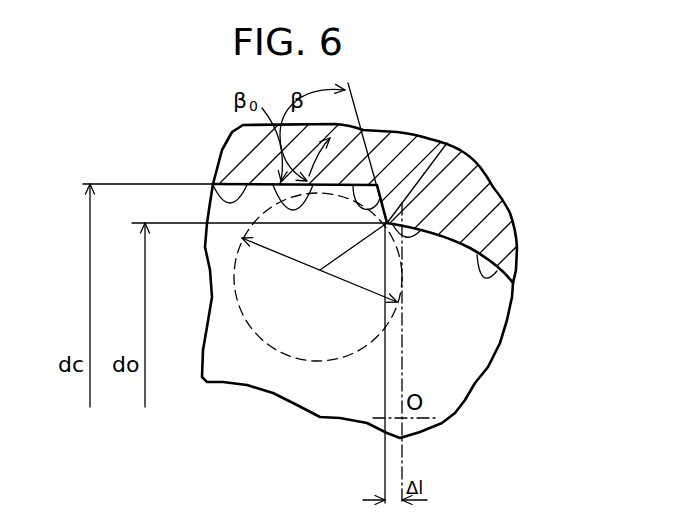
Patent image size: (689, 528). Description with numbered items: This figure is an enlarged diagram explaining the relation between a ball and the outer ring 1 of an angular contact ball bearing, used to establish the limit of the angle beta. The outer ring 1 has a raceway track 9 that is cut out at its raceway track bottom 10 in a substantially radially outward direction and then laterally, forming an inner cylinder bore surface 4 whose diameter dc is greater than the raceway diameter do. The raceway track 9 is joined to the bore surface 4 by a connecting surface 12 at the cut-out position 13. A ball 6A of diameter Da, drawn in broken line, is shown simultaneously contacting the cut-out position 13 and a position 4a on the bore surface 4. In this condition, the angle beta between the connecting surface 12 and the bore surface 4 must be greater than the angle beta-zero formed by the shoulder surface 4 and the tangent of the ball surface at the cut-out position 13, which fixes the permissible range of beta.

The outer ring 1 is at (483, 200).
The inner cylinder bore surface 4 is at (208, 185).
The position on the bore surface 4a is at (228, 183).
The ball 6A is at (277, 315).
The raceway track 9 is at (514, 268).
The raceway track bottom 10 is at (467, 180).
The plane surface 12 is at (387, 222).
The cut-out position 13 is at (447, 143).